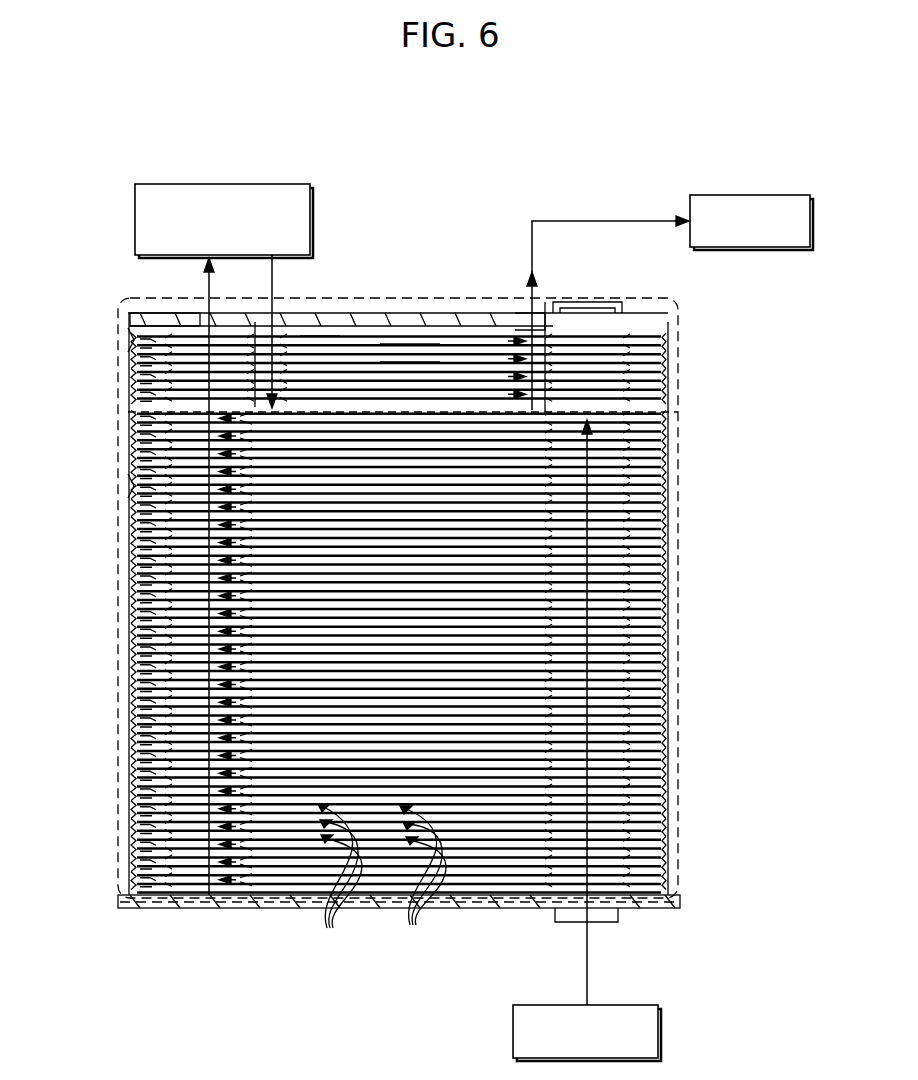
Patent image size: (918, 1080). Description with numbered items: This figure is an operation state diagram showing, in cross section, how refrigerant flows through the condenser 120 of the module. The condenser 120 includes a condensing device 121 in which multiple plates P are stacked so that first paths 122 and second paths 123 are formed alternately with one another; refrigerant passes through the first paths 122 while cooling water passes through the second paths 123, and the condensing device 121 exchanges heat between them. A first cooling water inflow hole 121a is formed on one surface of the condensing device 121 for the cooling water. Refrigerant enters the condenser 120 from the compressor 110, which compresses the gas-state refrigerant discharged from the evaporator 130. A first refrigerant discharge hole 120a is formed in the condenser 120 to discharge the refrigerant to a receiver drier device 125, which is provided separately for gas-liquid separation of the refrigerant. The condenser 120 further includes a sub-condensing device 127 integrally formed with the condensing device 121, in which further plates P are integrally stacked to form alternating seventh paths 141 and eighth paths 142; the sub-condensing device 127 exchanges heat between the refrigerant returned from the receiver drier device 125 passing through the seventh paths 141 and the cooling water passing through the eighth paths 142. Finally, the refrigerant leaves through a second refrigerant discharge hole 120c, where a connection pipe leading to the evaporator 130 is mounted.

The compressor 110 is at (660, 1033).
The condenser 120 is at (742, 429).
The first refrigerant discharge hole 120a is at (191, 334).
The second refrigerant discharge hole 120c is at (528, 333).
The condensing device 121 is at (680, 599).
The first cooling water inflow hole 121a is at (585, 322).
The first paths 122 is at (421, 888).
The second paths 123 is at (336, 883).
The receiver drier device 125 is at (224, 184).
The sub-condensing device 127 is at (680, 360).
The evaporator 130 is at (750, 195).
The seventh paths 141 is at (417, 354).
The eighth paths 142 is at (315, 333).
The plates P is at (128, 354).